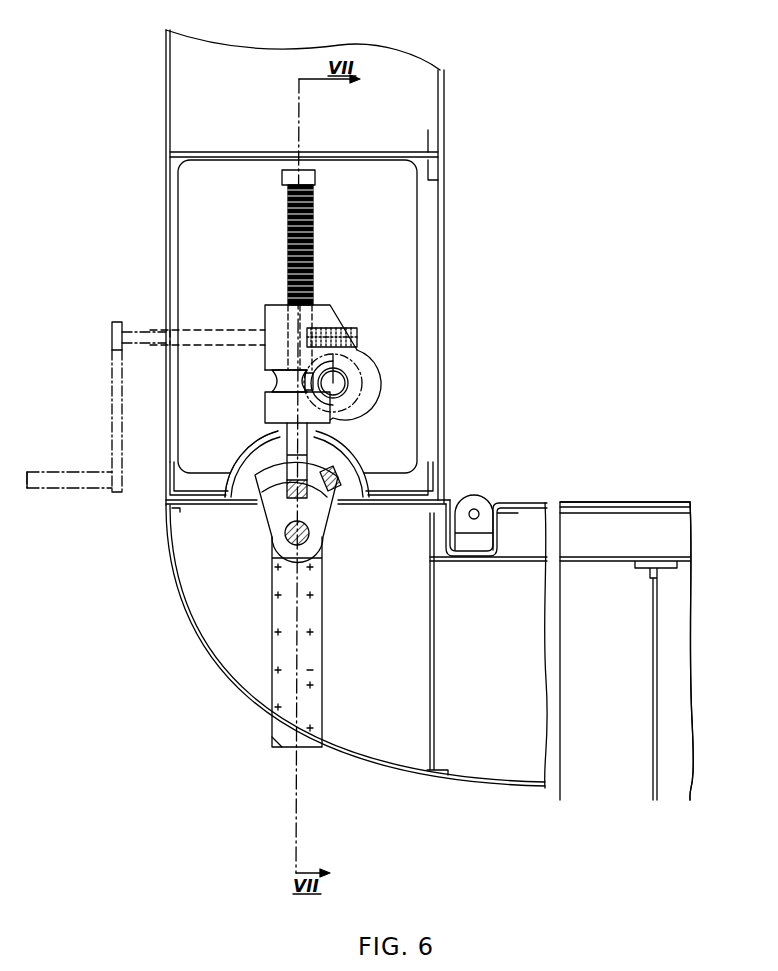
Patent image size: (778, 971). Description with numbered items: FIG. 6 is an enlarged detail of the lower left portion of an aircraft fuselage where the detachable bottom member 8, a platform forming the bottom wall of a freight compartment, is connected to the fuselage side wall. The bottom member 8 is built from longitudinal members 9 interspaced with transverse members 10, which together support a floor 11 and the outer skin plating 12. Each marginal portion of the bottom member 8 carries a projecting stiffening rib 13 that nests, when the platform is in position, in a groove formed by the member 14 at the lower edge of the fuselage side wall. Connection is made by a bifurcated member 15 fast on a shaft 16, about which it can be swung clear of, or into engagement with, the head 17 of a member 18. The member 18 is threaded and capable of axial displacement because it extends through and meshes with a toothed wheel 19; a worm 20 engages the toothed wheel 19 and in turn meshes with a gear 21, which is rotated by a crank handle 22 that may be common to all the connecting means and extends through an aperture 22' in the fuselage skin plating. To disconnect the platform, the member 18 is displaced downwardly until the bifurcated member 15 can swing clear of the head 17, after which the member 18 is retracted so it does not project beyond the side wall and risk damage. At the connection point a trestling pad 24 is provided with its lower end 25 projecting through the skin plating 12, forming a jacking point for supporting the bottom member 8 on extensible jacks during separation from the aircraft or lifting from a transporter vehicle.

The detachable bottom member 8 is at (673, 500).
The longitudinal members 9 is at (652, 710).
The transverse members 10 is at (625, 678).
The floor 11 is at (603, 503).
The outer skin plating 12 is at (353, 760).
The stiffening rib 13 is at (245, 475).
The groove-forming member 14 is at (350, 452).
The bifurcated members 15 is at (310, 540).
The shaft 16 is at (290, 538).
The heads 17 is at (303, 500).
The axially displaceable members 18 is at (285, 450).
The toothed wheels 19 is at (272, 381).
The worms 20 is at (338, 382).
The gears 21 is at (343, 333).
The crank handle 22 is at (74, 407).
The aperture 22' is at (193, 323).
The trestling pads 24 is at (323, 660).
The lower ends 25 is at (278, 738).